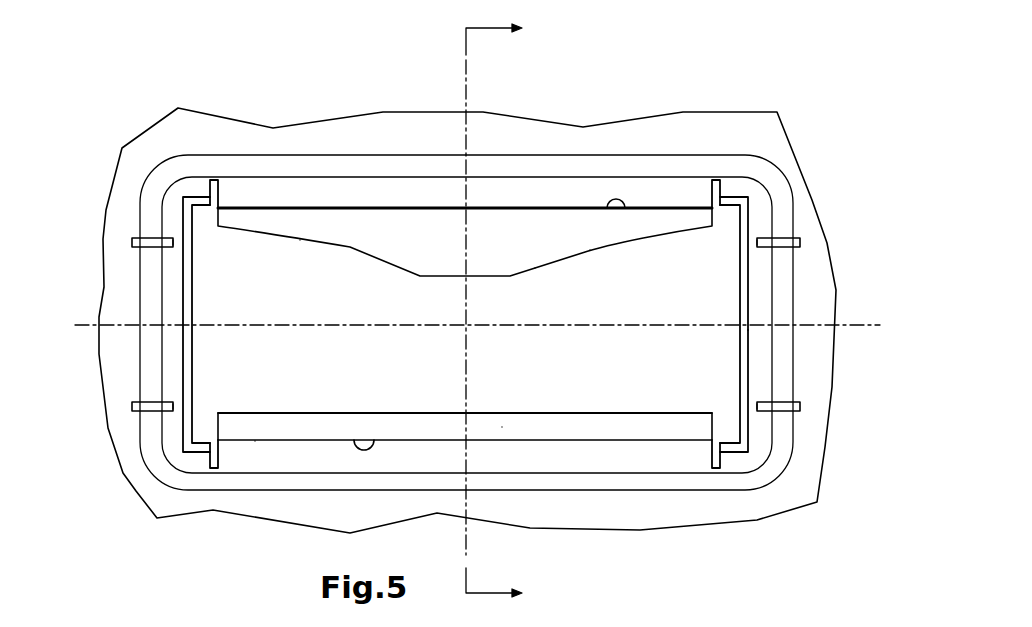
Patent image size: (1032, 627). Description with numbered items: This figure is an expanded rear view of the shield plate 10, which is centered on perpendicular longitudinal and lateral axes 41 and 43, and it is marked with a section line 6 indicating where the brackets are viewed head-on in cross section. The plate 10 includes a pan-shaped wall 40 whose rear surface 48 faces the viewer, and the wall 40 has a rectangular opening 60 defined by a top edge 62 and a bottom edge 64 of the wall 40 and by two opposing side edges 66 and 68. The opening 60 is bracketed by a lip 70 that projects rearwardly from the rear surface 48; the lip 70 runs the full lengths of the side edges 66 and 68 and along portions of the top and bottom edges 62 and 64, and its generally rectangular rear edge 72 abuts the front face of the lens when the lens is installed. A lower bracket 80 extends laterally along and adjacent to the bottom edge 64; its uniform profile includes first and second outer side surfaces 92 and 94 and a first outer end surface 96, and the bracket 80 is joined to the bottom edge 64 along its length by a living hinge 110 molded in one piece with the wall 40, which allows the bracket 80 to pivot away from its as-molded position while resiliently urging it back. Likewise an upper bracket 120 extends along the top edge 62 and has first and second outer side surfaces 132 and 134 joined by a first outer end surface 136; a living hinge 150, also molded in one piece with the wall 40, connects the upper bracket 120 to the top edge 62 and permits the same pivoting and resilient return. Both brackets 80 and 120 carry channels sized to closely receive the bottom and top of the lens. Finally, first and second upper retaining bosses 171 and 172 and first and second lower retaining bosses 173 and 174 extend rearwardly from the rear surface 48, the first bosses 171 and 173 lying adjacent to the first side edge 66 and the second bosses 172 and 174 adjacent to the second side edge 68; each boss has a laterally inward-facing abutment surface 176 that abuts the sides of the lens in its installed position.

The section line 6- 6 is at (503, 312).
The shield plate 10 is at (744, 90).
The wall 40 is at (121, 256).
The longitudinal axis 41 is at (466, 82).
The lateral axis 43 is at (845, 324).
The rear surface 48 is at (121, 289).
The opening 60 is at (533, 324).
The top edge 62 is at (202, 210).
The bottom edge 64 is at (200, 443).
The first side edge 66 is at (193, 345).
The second side edge 68 is at (740, 345).
The lip 70 is at (748, 358).
The rear edge 72 is at (745, 380).
The lower bracket 80 is at (328, 412).
The first outer side surface 92 is at (372, 443).
The second outer side surface 94 is at (423, 412).
The first outer end surface 96 is at (502, 427).
The hinge 110 is at (255, 441).
The upper bracket 120 is at (348, 247).
The first outer side surface 132 is at (622, 208).
The second outer side surface 134 is at (590, 245).
The first outer end surface 136 is at (535, 242).
The hinge 150 is at (281, 208).
The first upper retaining boss 171 is at (149, 237).
The second upper retaining boss 172 is at (798, 249).
The first lower retaining boss 173 is at (149, 402).
The second lower retaining boss 174 is at (783, 410).
The abutment surface 176 is at (175, 244).